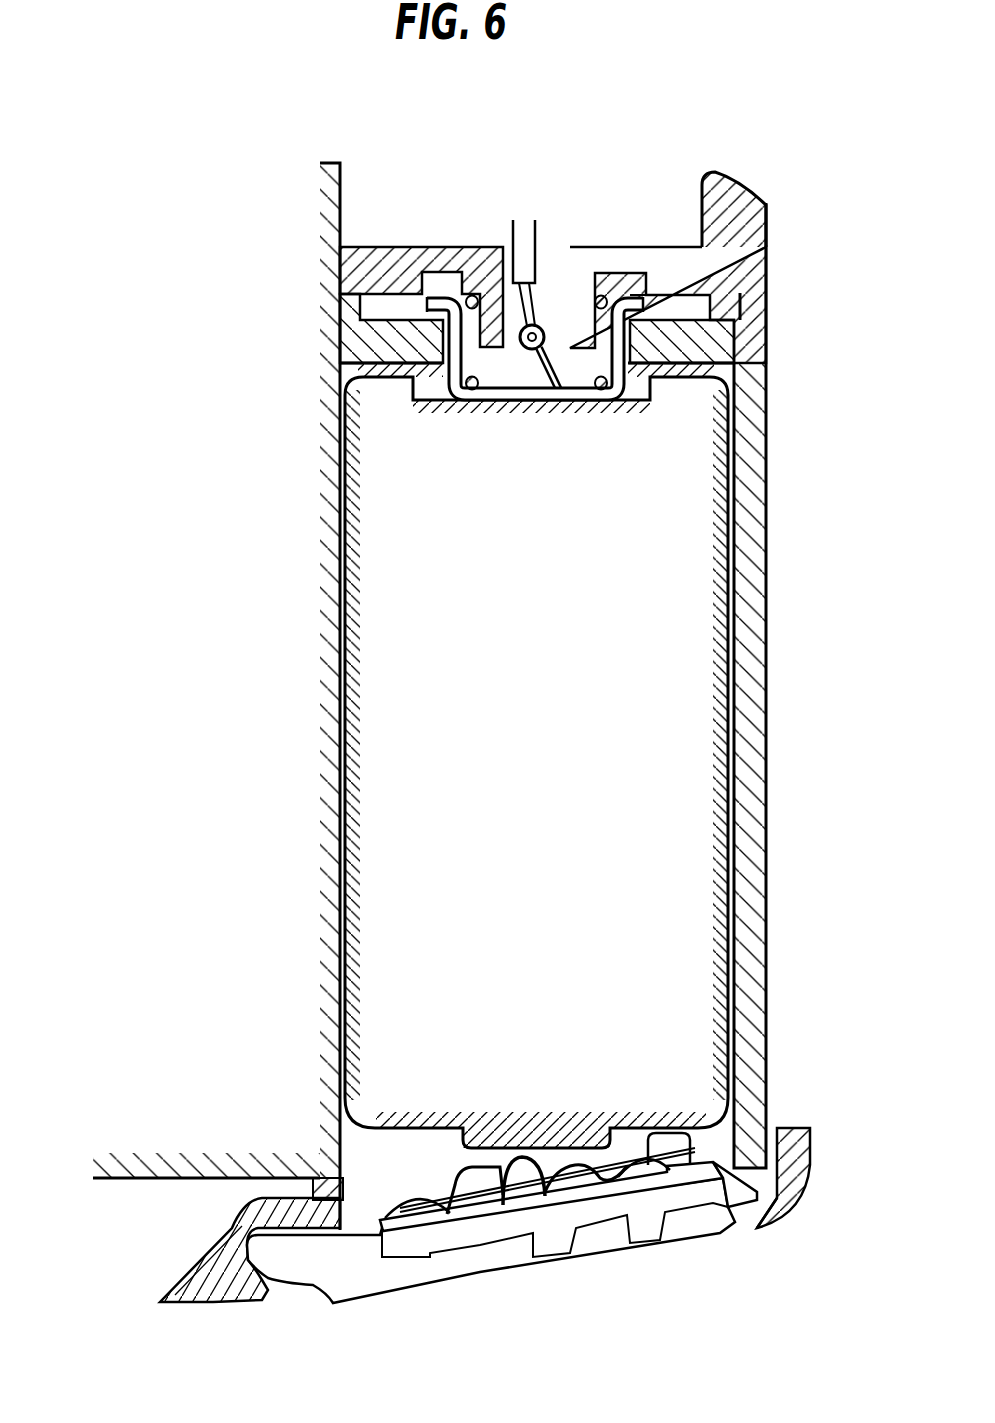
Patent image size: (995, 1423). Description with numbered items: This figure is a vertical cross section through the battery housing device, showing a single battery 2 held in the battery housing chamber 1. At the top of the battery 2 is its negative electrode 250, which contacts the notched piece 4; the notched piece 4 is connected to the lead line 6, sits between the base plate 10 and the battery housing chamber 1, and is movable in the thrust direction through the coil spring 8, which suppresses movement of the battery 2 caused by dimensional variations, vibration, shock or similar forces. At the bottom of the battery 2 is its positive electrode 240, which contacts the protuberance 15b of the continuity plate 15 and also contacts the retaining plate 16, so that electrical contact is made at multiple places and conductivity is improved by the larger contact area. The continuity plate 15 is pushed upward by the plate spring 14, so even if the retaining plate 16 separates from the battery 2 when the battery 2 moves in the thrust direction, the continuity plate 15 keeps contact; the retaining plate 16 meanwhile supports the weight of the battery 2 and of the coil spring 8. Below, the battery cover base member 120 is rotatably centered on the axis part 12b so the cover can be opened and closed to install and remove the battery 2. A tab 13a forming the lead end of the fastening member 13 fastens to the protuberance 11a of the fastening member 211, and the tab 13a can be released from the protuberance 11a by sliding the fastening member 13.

The battery housing chamber 1 is at (312, 681).
The battery 2 is at (680, 771).
The notched piece 4 is at (715, 306).
The lead line 6 is at (508, 237).
The coil spring 8 is at (632, 290).
The base plate 10 is at (742, 183).
The negative electrode 250 is at (433, 400).
The positive electrode 240 is at (463, 1142).
The fastening member 211 is at (790, 1135).
The protuberance 11a is at (760, 1216).
The axis part 12b is at (265, 1257).
The battery cover base member 120 is at (357, 1280).
The fastening member 13 is at (597, 1240).
The tab 13a is at (720, 1197).
The plate spring 14 is at (470, 1190).
The continuity plate 15 is at (480, 1180).
The protuberance 15b is at (522, 1155).
The retaining plate 16 is at (413, 1250).